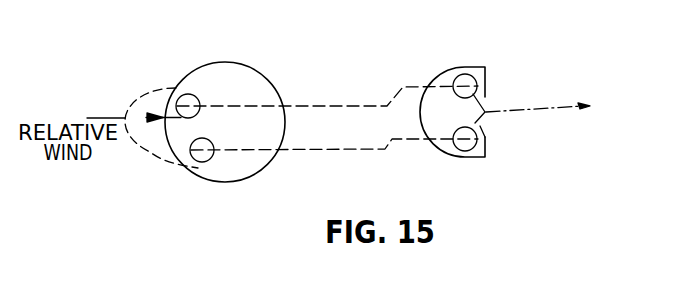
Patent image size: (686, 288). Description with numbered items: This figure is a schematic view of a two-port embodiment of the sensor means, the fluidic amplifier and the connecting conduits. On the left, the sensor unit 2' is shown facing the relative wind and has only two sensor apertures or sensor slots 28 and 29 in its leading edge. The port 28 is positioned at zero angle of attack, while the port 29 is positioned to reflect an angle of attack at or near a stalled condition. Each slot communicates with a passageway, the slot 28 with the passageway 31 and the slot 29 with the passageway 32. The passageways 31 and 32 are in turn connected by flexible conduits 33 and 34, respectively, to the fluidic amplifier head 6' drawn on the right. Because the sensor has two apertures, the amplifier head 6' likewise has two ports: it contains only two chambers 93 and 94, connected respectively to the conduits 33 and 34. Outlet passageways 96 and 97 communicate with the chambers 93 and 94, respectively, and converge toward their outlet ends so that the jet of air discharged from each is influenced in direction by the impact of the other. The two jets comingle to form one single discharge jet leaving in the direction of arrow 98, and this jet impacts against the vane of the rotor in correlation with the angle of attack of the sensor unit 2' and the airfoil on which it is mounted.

The sensor unit 2' is at (225, 98).
The sensor slot 28 is at (163, 117).
The sensor slot 29 is at (178, 159).
The passageway 31 is at (196, 100).
The passageway 32 is at (206, 153).
The conduit 33 is at (342, 102).
The conduit 34 is at (315, 149).
The fluidic amplifier head 6' is at (452, 81).
The chamber 93 is at (467, 82).
The chamber 94 is at (465, 147).
The outlet passageway 96 is at (486, 93).
The outlet passageway 97 is at (486, 133).
The arrow 98 is at (552, 107).